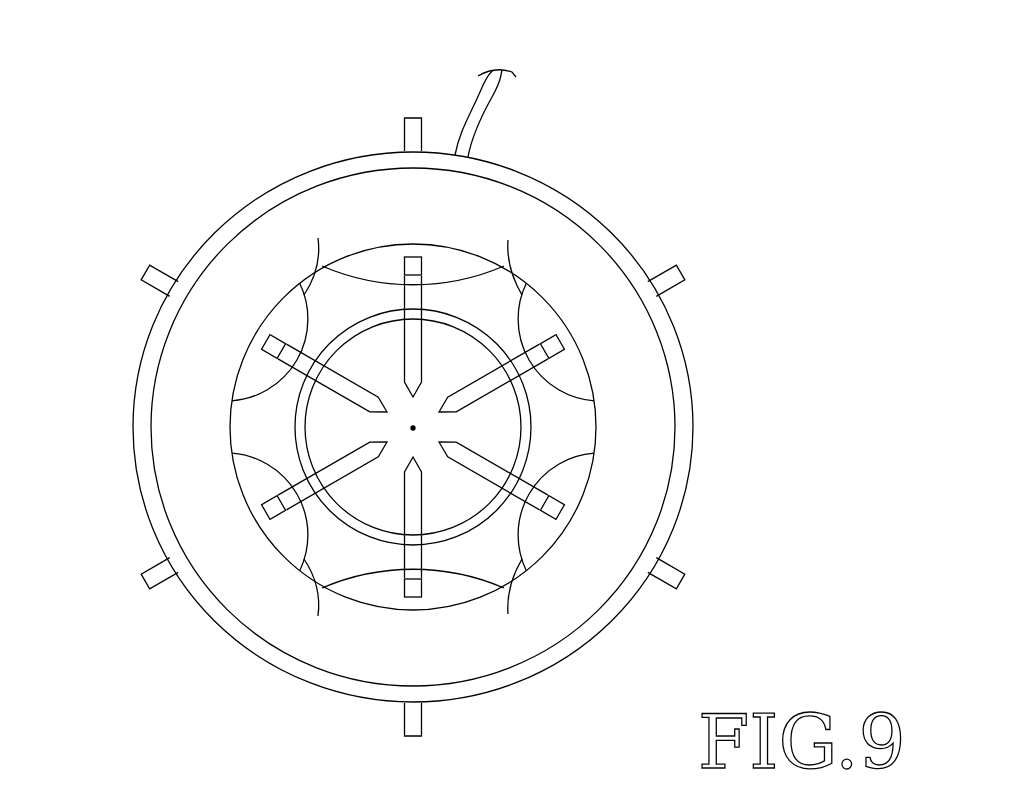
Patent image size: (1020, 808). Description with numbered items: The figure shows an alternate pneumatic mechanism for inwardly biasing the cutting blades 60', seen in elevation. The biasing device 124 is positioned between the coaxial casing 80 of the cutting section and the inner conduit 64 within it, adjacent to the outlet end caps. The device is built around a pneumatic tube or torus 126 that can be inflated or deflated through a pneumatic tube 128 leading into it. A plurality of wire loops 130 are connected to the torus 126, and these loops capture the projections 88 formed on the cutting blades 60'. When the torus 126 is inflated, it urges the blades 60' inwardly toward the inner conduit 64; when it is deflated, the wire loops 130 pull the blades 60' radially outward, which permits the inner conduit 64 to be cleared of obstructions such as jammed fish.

The biasing device 124 is at (676, 158).
The pneumatic tube or torus 126 is at (655, 358).
The coaxial casing 80 is at (503, 168).
The pneumatic tube 128 is at (480, 87).
The cutting blades 60' is at (376, 407).
The wire loops 130 is at (320, 250).
The projections 88 is at (408, 253).
The inner conduit 64 is at (495, 540).